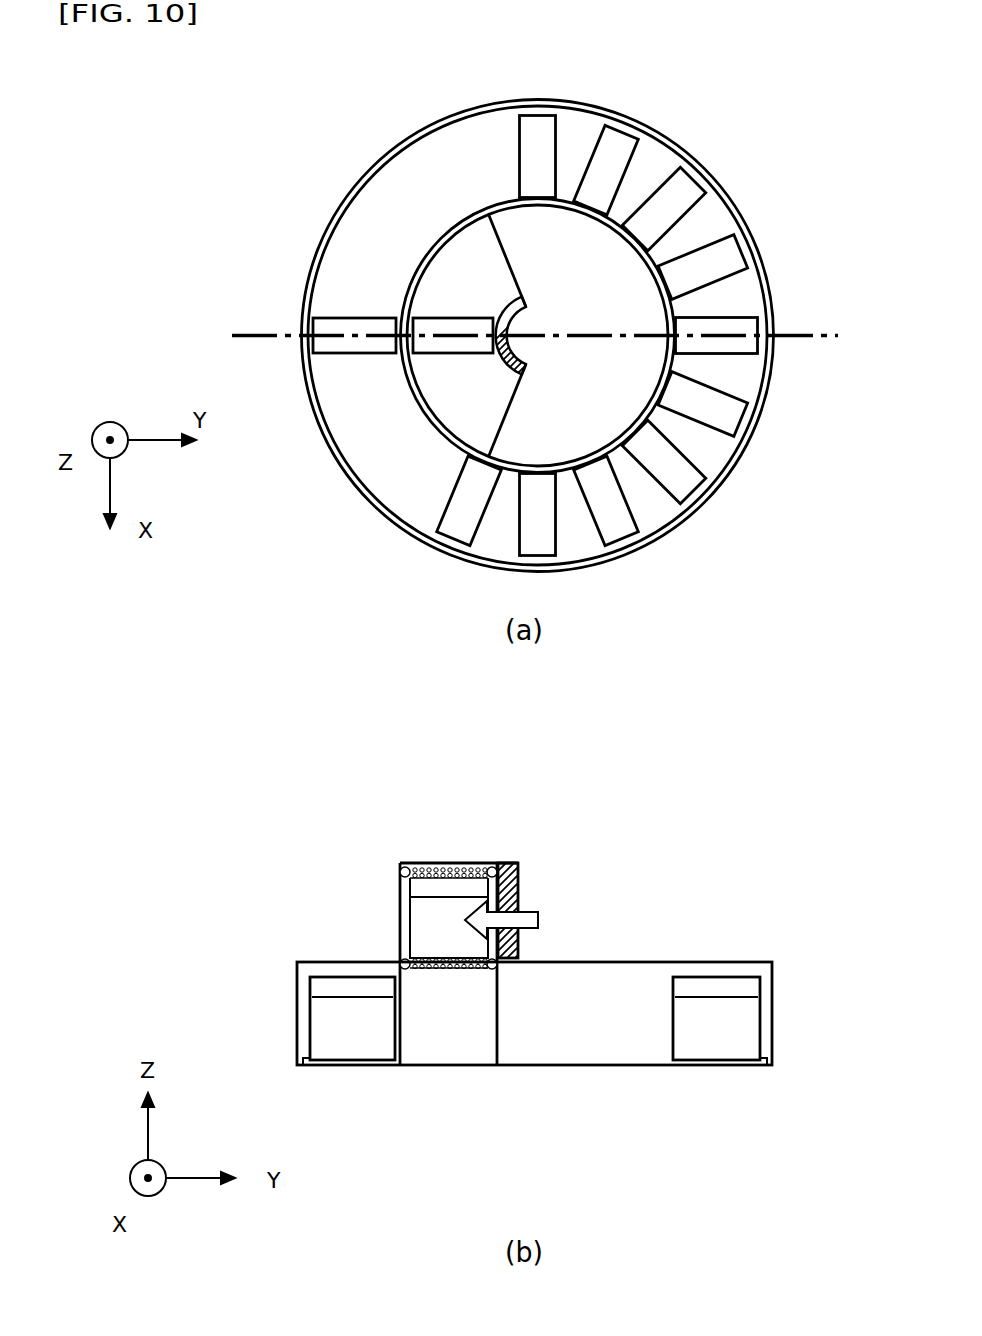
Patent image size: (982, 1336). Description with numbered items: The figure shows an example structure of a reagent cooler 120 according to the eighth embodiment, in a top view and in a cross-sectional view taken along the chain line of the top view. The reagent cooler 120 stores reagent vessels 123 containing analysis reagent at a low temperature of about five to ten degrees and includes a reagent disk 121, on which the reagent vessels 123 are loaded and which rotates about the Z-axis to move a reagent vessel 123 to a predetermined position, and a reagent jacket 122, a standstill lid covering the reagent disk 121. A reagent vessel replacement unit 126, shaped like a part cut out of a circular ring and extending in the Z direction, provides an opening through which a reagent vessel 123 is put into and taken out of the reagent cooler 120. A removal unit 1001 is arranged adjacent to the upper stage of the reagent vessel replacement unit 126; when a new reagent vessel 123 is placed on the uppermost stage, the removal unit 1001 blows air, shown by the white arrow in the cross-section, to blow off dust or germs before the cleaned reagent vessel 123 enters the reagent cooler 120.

The reagent cooler 120 is at (520, 561).
The reagent disk 121 is at (338, 257).
The reagent jacket 122 is at (370, 167).
The reagent vessel 123 is at (331, 328).
The reagent vessel replacement unit 126 is at (497, 408).
The removal unit 1001 is at (515, 323).